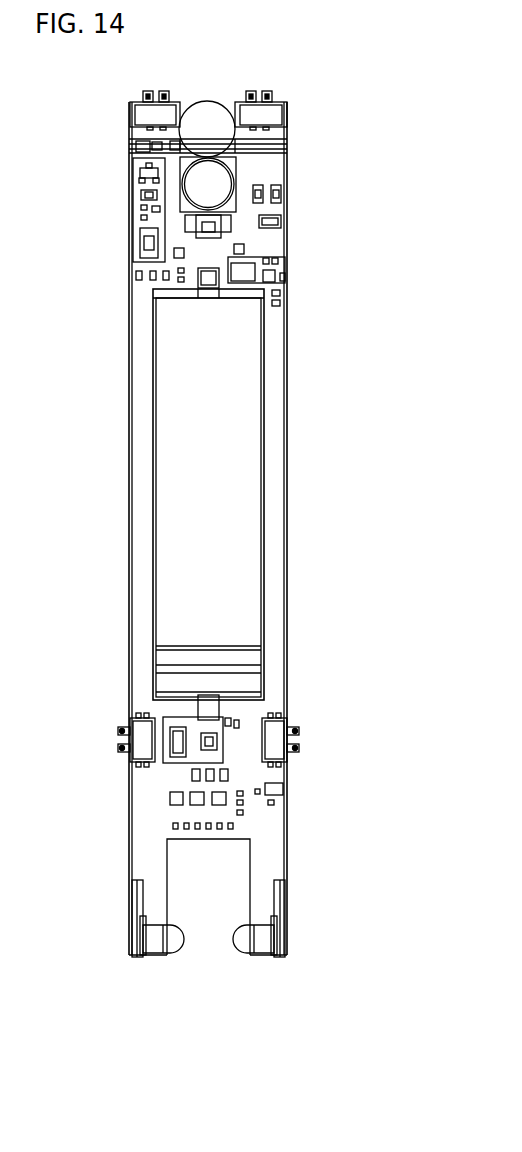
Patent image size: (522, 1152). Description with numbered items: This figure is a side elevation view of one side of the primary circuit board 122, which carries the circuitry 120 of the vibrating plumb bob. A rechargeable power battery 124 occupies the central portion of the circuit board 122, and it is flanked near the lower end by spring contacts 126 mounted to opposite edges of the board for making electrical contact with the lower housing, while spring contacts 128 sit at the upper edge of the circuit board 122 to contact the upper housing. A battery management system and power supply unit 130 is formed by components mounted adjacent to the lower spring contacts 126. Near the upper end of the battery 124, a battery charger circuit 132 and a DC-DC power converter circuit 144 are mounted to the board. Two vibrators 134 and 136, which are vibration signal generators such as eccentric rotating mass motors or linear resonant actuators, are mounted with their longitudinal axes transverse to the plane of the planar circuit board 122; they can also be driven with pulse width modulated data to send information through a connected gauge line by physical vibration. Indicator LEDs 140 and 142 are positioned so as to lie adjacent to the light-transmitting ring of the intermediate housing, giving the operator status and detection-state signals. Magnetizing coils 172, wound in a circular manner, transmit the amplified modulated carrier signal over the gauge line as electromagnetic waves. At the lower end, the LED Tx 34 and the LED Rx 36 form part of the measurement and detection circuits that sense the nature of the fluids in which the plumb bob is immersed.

The circuitry 120 is at (321, 351).
The primary circuit board 122 is at (296, 507).
The rechargeable power battery 124 is at (225, 470).
The spring contacts 126 is at (142, 740).
The spring contacts 128 is at (152, 117).
The battery management system and power supply unit 130 is at (175, 777).
The battery charger circuit 132 is at (140, 225).
The vibrator 134 is at (207, 132).
The vibrator 136 is at (217, 180).
The indicator LED 140 is at (178, 257).
The indicator LED 142 is at (245, 248).
The DC-DC power converter circuit 144 is at (285, 265).
The magnetizing coils 172 is at (270, 148).
The LED Tx 34 is at (180, 942).
The LED Rx 36 is at (237, 942).